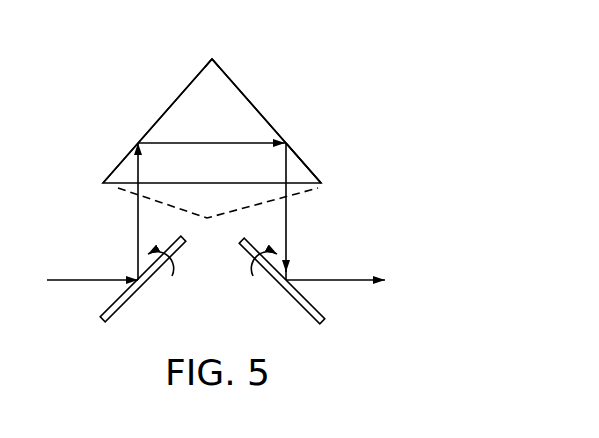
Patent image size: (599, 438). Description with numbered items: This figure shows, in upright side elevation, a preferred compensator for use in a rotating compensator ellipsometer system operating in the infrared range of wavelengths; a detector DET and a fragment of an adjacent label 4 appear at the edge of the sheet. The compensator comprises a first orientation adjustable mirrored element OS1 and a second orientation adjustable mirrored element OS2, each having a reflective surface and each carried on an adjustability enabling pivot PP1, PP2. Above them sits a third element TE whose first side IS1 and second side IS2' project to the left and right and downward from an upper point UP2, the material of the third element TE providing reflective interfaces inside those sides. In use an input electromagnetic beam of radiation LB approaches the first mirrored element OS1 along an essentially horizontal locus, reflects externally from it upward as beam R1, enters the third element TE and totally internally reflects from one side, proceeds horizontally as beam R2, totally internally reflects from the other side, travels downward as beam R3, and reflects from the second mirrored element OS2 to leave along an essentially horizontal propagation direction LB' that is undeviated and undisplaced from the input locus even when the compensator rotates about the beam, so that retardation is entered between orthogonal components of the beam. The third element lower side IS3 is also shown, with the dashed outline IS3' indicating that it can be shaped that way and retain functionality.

The detector DET is at (81, 6).
The partial numeral from adjacent figure 4 is at (7, 31).
The third element TE is at (150, 104).
The upper point UP2 is at (215, 49).
The first side IS1 is at (134, 140).
The second inclined surface IS2' is at (296, 121).
The third element lower side IS3 is at (335, 161).
The alternative lower side shape IS3' is at (185, 220).
The upwardly vertically oriented beam R1 is at (134, 218).
The horizontal beam R2 is at (212, 140).
The downward vertically oriented beam R3 is at (290, 229).
The input electromagnetic beam of radiation LB is at (77, 278).
The output beam propagation direction locus LB' is at (354, 280).
The first orientation adjustable mirrored element OS1 is at (101, 304).
The second orientation adjustable mirrored element OS2 is at (318, 305).
The pivot PP1 is at (144, 296).
The pivot PP2 is at (279, 291).